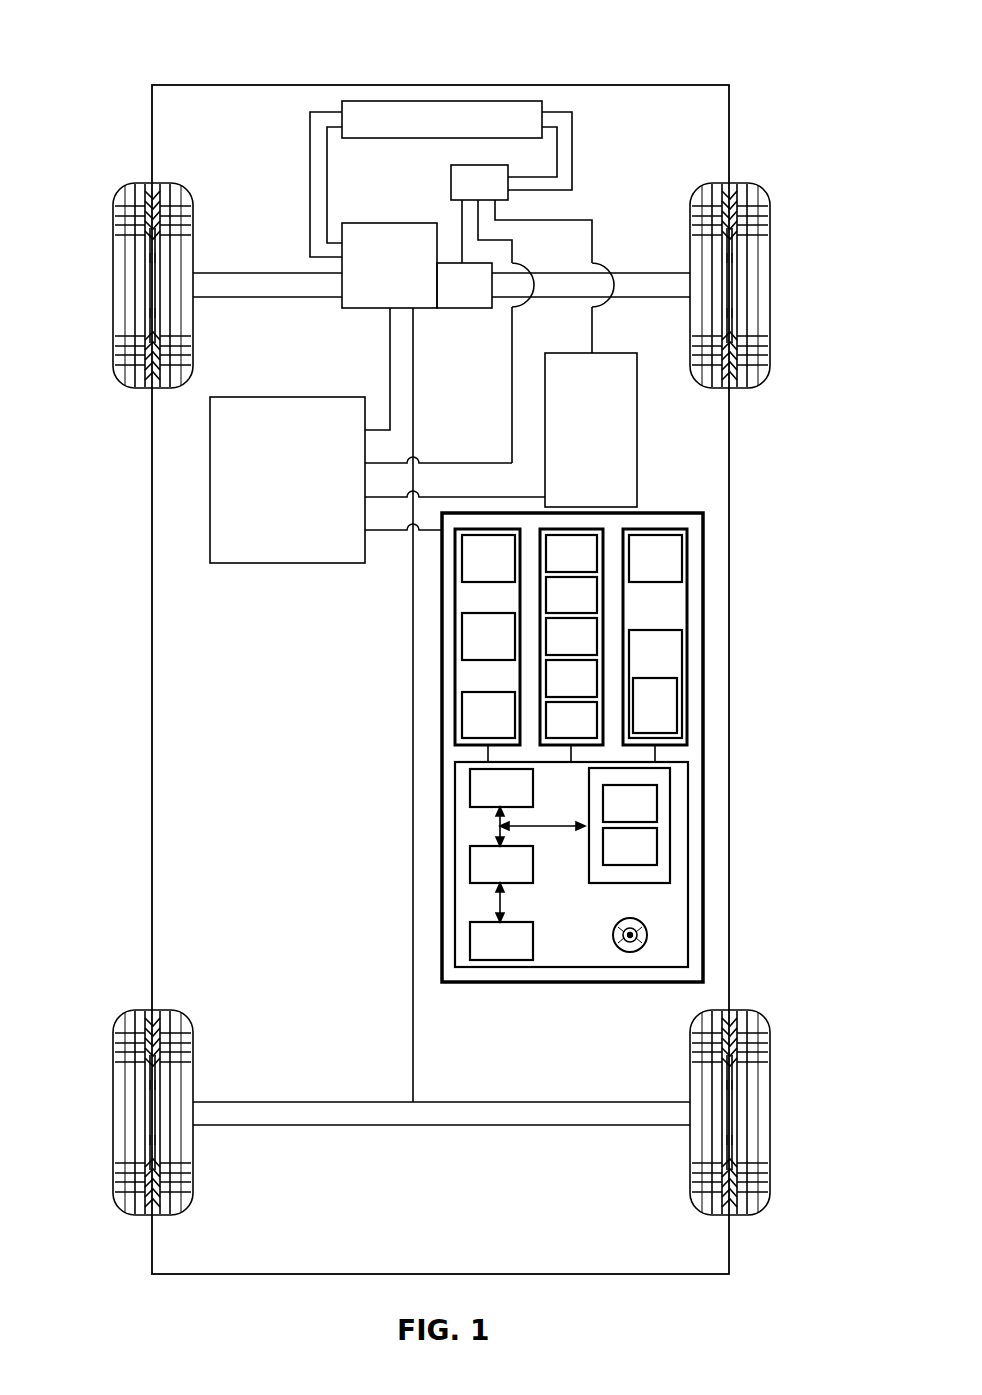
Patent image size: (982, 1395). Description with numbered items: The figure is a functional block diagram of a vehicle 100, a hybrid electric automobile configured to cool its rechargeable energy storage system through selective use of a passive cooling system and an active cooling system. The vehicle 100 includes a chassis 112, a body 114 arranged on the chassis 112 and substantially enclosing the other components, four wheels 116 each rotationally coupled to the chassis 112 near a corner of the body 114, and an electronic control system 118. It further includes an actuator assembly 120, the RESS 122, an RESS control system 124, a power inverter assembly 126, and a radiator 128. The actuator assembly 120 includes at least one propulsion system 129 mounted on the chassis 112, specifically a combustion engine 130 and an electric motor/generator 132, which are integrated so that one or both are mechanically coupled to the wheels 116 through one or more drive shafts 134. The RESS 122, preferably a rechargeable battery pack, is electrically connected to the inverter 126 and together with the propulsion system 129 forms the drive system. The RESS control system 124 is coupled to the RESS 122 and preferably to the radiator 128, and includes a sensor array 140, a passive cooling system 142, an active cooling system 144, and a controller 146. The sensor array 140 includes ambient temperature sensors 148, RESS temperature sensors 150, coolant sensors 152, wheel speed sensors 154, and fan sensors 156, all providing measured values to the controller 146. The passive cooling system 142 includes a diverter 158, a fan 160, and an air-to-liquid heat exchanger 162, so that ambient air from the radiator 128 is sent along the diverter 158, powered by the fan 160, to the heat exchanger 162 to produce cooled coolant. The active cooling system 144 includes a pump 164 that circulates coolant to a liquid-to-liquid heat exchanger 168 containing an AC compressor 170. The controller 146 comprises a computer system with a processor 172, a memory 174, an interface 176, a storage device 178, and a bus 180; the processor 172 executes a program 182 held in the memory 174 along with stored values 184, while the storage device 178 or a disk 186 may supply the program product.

The vehicle 100 is at (136, 48).
The chassis 112 is at (412, 1040).
The body 114 is at (152, 676).
The wheels 116 is at (113, 285).
The electronic control system 118 is at (288, 396).
The actuator assembly 120 is at (441, 345).
The rechargeable energy storage system (RESS) 122 is at (637, 430).
The RESS control system 124 is at (705, 522).
The power inverter assembly 126 is at (451, 180).
The radiator 128 is at (445, 101).
The propulsion system 129 is at (457, 260).
The combustion engine 130 is at (377, 250).
The electric motor/generator 132 is at (465, 295).
The drive shafts 134 is at (243, 273).
The sensor array 140 is at (588, 527).
The passive cooling system 142 is at (457, 627).
The active cooling system 144 is at (690, 627).
The controller 146 is at (573, 967).
The ambient temperature sensors 148 is at (573, 553).
The RESS temperature sensors 150 is at (582, 588).
The coolant sensors 152 is at (573, 637).
The wheel speed sensors 154 is at (572, 672).
The fan sensors 156 is at (572, 720).
The diverter 158 is at (480, 558).
The fan 160 is at (480, 637).
The air-to-liquid heat exchanger 162 is at (480, 715).
The pump 164 is at (653, 558).
The liquid-to-liquid heat exchanger 168 is at (653, 655).
The AC compressor 170 is at (653, 722).
The processor 172 is at (478, 785).
The memory 174 is at (670, 780).
The interface 176 is at (478, 865).
The storage device 178 is at (478, 940).
The bus 180 is at (495, 826).
The program 182 is at (650, 803).
The stored values 184 is at (650, 848).
The disk 186 is at (648, 935).